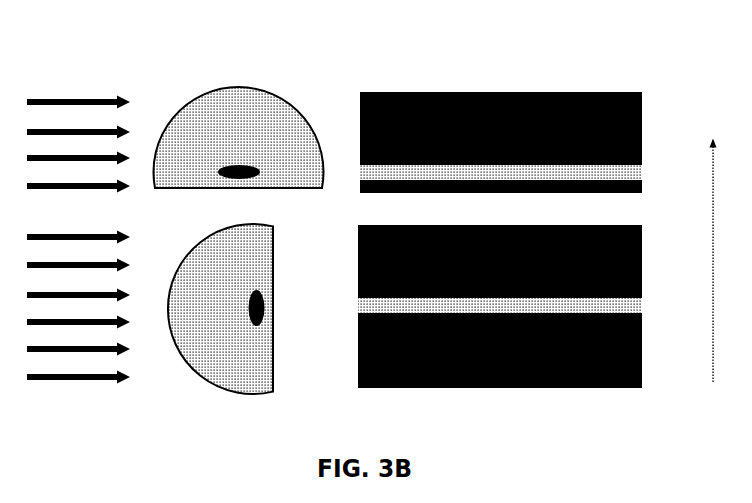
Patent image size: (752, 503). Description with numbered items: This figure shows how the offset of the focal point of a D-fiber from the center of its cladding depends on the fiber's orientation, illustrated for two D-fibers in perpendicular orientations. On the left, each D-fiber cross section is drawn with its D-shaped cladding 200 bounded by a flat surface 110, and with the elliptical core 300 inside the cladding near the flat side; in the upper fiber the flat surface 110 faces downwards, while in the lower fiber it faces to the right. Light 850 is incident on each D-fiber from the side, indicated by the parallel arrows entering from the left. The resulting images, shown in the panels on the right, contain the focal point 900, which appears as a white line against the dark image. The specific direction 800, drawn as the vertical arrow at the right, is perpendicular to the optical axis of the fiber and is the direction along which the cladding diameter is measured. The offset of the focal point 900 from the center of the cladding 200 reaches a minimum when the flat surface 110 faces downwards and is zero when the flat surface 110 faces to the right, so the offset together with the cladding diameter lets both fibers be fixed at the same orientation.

The flat surface 110 is at (179, 192).
The cladding 200 is at (235, 123).
The elliptical core 300 is at (228, 160).
The specific direction 800 is at (712, 244).
The light 850 is at (78, 223).
The focal point 900 is at (551, 173).